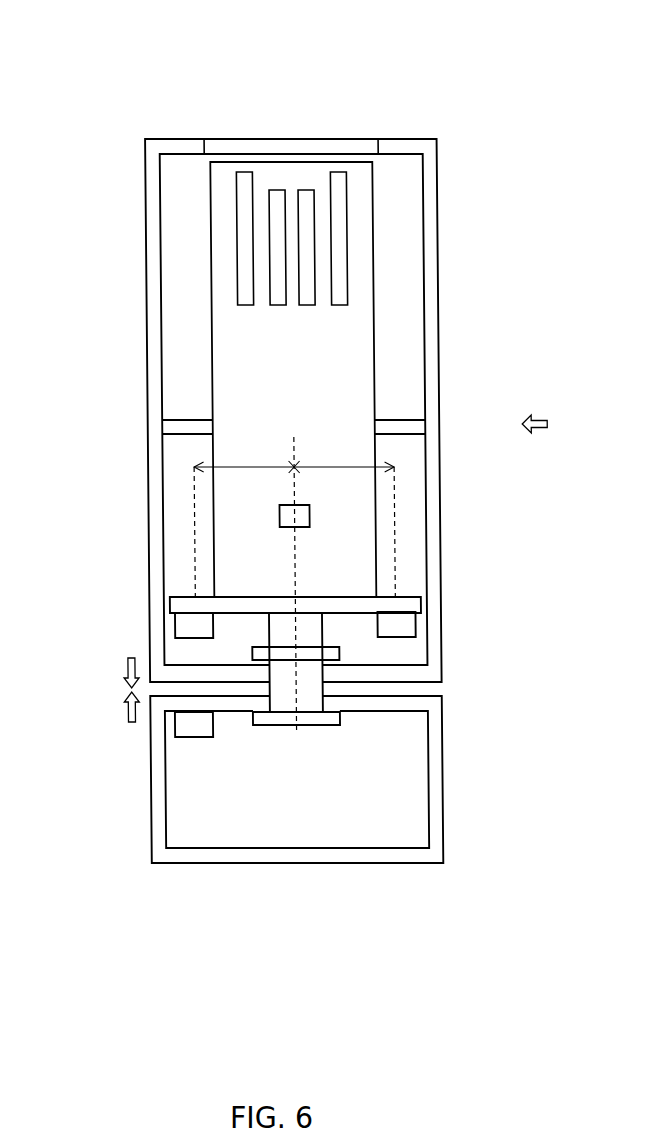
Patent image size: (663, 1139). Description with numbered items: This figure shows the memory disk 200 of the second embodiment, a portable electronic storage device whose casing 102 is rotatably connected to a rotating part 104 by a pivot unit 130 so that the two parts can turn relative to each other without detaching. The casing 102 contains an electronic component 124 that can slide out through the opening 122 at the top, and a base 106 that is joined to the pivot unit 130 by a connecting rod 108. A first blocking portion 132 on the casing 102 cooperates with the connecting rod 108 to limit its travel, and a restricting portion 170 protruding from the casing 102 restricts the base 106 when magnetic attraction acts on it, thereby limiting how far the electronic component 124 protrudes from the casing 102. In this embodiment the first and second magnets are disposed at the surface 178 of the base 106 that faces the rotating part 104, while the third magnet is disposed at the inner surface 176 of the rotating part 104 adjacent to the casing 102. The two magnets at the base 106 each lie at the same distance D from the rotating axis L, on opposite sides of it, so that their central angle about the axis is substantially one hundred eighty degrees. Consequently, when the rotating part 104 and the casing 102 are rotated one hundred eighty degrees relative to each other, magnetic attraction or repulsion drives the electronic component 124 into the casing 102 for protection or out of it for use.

The memory disk 200 is at (128, 56).
The casing 102 is at (432, 195).
The rotating part 104 is at (434, 770).
The base 106 is at (185, 600).
The connecting rod 108 is at (301, 642).
The opening 122 is at (345, 141).
The electronic component 124 is at (362, 338).
The pivot unit 130 is at (312, 725).
The first blocking portion 132 is at (308, 517).
The restricting portion 170 is at (420, 427).
The inner surface 176 is at (222, 726).
The surface 178 is at (244, 630).